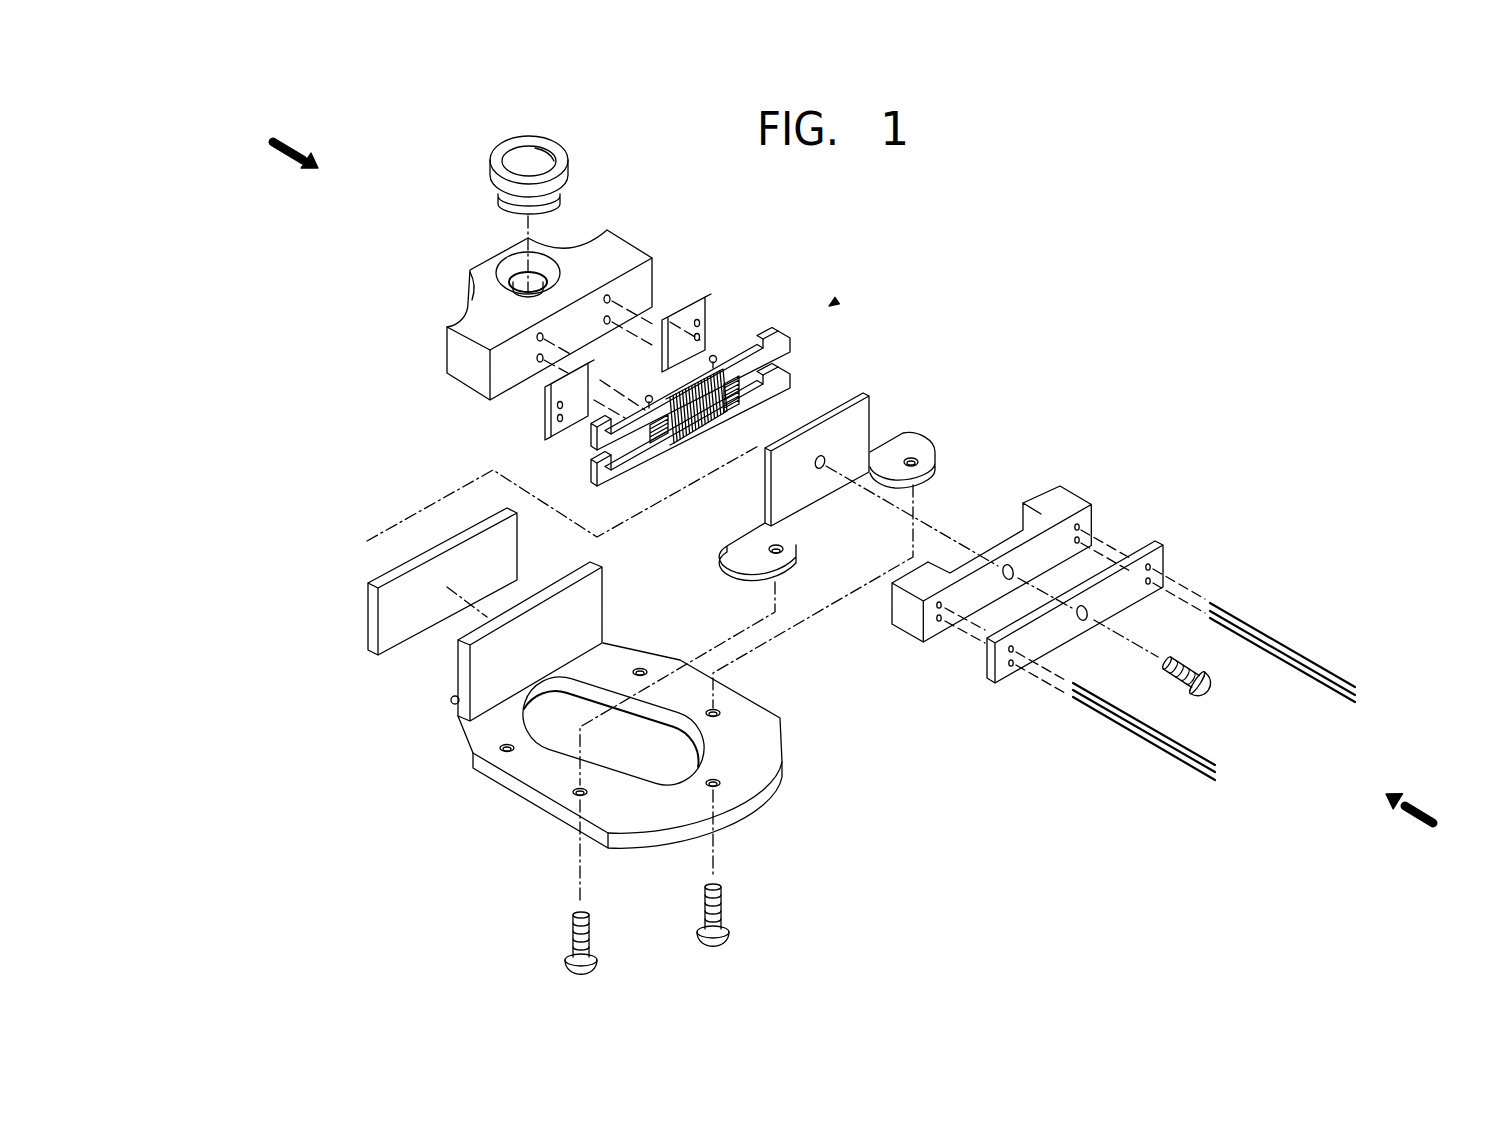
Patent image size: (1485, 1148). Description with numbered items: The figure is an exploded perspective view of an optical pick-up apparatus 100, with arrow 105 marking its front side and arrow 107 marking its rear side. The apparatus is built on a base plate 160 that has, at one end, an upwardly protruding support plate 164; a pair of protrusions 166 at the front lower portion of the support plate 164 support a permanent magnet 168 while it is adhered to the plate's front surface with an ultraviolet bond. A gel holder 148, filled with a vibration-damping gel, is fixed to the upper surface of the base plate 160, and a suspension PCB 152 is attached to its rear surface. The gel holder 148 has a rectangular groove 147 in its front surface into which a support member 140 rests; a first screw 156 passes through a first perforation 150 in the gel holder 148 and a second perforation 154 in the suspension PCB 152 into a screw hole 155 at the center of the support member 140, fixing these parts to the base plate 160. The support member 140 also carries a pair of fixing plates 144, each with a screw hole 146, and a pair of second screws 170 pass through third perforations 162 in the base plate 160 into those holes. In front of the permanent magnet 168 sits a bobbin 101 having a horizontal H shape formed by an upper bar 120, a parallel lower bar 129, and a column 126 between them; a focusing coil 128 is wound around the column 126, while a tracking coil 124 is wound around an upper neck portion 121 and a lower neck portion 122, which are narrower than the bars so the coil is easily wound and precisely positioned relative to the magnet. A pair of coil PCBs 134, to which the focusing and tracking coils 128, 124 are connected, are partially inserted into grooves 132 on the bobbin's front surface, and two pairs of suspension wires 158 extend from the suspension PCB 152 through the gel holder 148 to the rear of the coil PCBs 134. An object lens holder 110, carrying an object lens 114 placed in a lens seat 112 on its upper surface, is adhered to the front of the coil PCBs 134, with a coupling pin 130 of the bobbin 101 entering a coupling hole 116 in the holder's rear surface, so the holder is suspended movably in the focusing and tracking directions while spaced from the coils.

The optical pick-up apparatus 100 is at (822, 206).
The bobbin 101 is at (836, 302).
The arrow 105 is at (282, 152).
The arrow 107 is at (1398, 817).
The object lens holder 110 is at (525, 333).
The lens seat 112 is at (518, 274).
The object lens 114 is at (490, 152).
The coupling hole 116 is at (538, 359).
The upper bar 120 is at (745, 393).
The upper neck portion 121 is at (717, 353).
The lower neck portion 122 is at (703, 437).
The tracking coil 124 is at (690, 378).
The column 126 is at (737, 414).
The focusing coil 128 is at (663, 448).
The lower bar 129 is at (784, 364).
The coupling pin 130 is at (692, 376).
The grooves 132 is at (575, 434).
The coil PCBs 134 is at (686, 316).
The support member 140 is at (875, 456).
The fixing plates 144 is at (950, 420).
The screw hole 146 is at (916, 461).
The rectangular groove 147 is at (1014, 522).
The gel holder 148 is at (1062, 501).
The first perforation 150 is at (1009, 565).
The suspension PCB 152 is at (1111, 575).
The second perforation 154 is at (1085, 608).
The screw hole 155 is at (822, 470).
The first screw 156 is at (1190, 692).
The suspension wires 158 is at (1308, 665).
The base plate 160 is at (588, 705).
The third perforations 162 is at (720, 711).
The support plate 164 is at (466, 668).
The protrusions 166 is at (451, 701).
The permanent magnet 168 is at (370, 615).
The second screws 170 is at (572, 938).